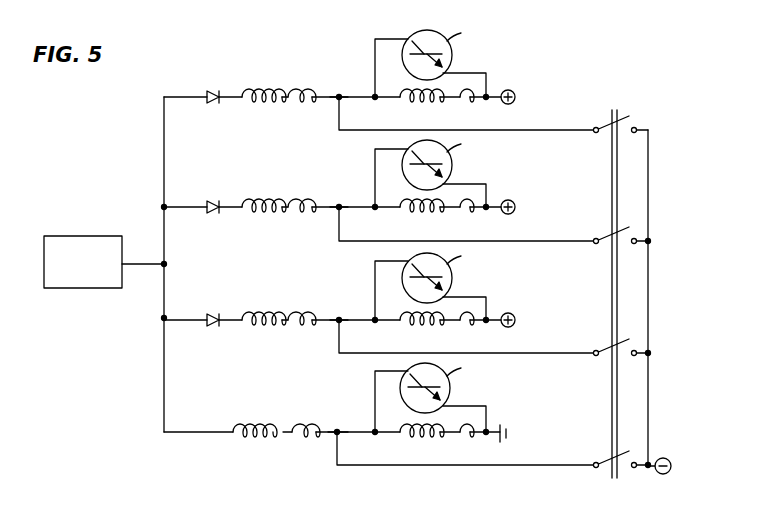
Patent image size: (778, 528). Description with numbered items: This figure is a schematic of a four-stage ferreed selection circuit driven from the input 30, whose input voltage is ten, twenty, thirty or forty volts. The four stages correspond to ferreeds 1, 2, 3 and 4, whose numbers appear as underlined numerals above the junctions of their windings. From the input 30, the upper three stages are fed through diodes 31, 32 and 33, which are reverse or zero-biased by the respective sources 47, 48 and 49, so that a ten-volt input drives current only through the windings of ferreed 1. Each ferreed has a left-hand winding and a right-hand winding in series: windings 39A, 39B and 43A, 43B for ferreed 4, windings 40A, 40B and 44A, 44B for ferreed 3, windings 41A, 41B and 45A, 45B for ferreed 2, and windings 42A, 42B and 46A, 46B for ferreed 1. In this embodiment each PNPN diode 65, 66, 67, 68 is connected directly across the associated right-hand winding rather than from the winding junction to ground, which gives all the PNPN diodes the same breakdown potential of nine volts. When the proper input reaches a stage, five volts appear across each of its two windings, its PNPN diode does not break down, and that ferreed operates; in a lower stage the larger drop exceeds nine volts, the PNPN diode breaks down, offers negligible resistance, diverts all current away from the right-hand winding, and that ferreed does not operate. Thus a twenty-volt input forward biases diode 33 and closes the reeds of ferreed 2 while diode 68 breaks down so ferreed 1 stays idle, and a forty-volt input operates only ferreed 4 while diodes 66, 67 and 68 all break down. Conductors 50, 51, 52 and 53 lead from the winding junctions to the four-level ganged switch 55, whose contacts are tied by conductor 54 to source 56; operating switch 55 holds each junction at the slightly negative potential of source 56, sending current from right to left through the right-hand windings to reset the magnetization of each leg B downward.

The ferreed 1 is at (353, 424).
The ferreed 2 is at (352, 311).
The ferreed 3 is at (355, 198).
The ferreed 4 is at (341, 87).
The input 30 is at (75, 236).
The diode 31 is at (213, 92).
The diode 32 is at (212, 202).
The diode 33 is at (212, 313).
The winding 39A is at (262, 85).
The winding 39B is at (304, 85).
The winding 40A is at (262, 196).
The winding 40B is at (304, 196).
The winding 41A is at (262, 308).
The winding 41B is at (304, 308).
The winding 42A is at (255, 420).
The winding 42B is at (305, 420).
The winding 43A is at (467, 107).
The winding 43B is at (422, 107).
The winding 44A is at (473, 218).
The winding 44B is at (422, 218).
The winding 45A is at (473, 330).
The winding 45B is at (422, 330).
The winding 46A is at (470, 443).
The winding 46B is at (422, 443).
The source 47 is at (517, 85).
The source 48 is at (512, 196).
The source 49 is at (512, 308).
The conductor 50 is at (548, 134).
The conductor 51 is at (548, 245).
The conductor 52 is at (553, 357).
The conductor 53 is at (489, 466).
The common conductor 54 is at (649, 299).
The four-level ganged switch 55 is at (611, 299).
The source 56 is at (665, 473).
The PNPN transistor 65 is at (410, 74).
The PNPN diode 66 is at (410, 185).
The PNPN diode 67 is at (410, 297).
The PNPN diode 68 is at (408, 407).